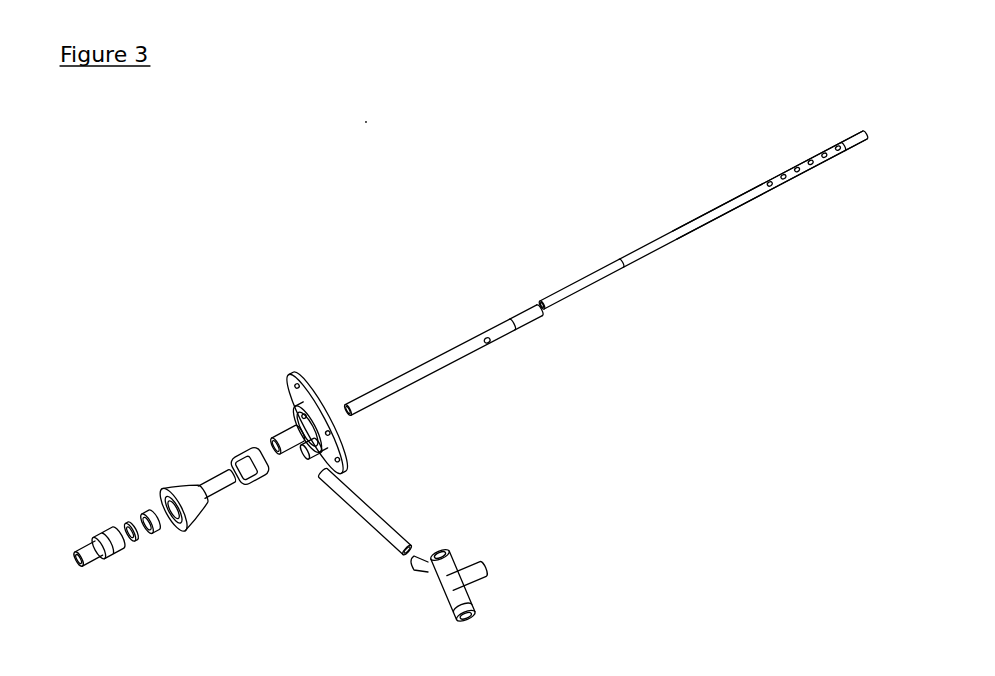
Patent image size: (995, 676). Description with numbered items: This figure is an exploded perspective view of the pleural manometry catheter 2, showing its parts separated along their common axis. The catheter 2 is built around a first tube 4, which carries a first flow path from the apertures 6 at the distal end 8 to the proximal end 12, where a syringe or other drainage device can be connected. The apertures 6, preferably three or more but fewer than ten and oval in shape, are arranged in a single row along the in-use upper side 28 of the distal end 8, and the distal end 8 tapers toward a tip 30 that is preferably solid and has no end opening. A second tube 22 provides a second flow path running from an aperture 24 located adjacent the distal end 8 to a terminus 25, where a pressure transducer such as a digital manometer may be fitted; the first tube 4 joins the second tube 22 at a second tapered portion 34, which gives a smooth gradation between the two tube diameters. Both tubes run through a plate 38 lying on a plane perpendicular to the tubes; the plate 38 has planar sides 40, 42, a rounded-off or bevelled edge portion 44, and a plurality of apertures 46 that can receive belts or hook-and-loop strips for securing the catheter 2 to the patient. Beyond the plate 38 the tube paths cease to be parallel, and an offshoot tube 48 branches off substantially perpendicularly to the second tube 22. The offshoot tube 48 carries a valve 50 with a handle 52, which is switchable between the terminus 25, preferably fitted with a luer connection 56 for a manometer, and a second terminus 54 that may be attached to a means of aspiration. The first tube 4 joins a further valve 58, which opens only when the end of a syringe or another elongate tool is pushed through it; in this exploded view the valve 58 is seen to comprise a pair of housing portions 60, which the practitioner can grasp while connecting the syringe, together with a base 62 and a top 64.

The pleural manometry catheter 2 is at (333, 137).
The first tube 4 is at (623, 267).
The apertures 6 is at (780, 192).
The distal end 8 is at (751, 190).
The proximal end 12 is at (80, 560).
The second tube 22 is at (430, 363).
The aperture 24 is at (492, 347).
The terminus 25 is at (462, 622).
The upper side 28 is at (722, 217).
The tip 30 is at (863, 140).
The second tapered portion 34 is at (525, 318).
The plate 38 is at (302, 375).
The planar side 40 is at (318, 392).
The planar side 42 is at (282, 397).
The bevelled edge portion 44 is at (288, 375).
The apertures 46 is at (317, 472).
The offshoot tube 48 is at (373, 515).
The valve 50 is at (435, 594).
The handle 52 is at (443, 550).
The second terminus 54 is at (477, 570).
The luer connection 56 is at (478, 612).
The valve 58 is at (192, 527).
The housing portions 60 is at (170, 483).
The base 62 is at (128, 517).
The top 64 is at (148, 512).